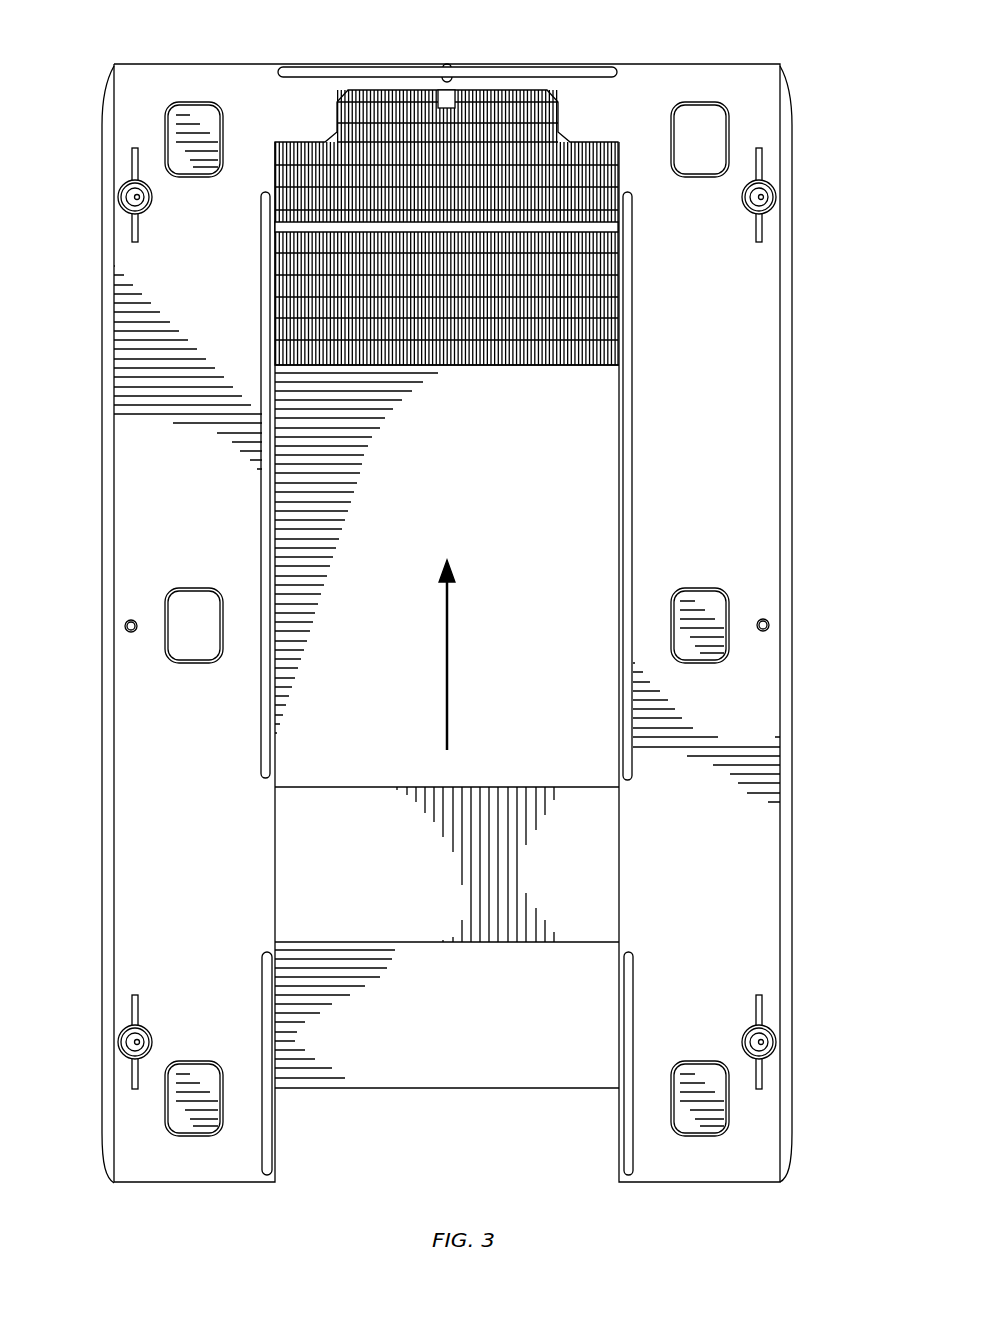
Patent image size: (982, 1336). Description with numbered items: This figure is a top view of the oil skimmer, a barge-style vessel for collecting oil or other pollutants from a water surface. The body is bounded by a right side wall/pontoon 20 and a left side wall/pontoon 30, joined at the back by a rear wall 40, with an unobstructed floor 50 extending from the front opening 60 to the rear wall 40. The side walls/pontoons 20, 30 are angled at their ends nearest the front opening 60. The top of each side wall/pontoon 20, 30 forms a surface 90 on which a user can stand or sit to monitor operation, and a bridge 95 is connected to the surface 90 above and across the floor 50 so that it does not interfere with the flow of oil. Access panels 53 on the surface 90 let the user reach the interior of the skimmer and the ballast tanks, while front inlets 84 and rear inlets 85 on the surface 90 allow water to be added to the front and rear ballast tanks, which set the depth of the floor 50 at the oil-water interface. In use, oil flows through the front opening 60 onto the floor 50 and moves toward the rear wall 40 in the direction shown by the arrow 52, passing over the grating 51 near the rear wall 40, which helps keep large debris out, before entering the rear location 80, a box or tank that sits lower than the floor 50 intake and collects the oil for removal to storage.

The right side wall/pontoon 20 is at (142, 932).
The left side wall/pontoon 30 is at (758, 869).
The rear wall 40 is at (240, 65).
The floor 50 is at (520, 650).
The grating 51 is at (513, 330).
The arrow 52 is at (447, 693).
The access panels 53 is at (180, 135).
The front opening 60 is at (542, 1180).
The rear location 80 is at (446, 243).
The front inlets 84 is at (130, 1050).
The rear inlets 85 is at (131, 197).
The surface 90 is at (190, 873).
The bridge 95 is at (386, 878).